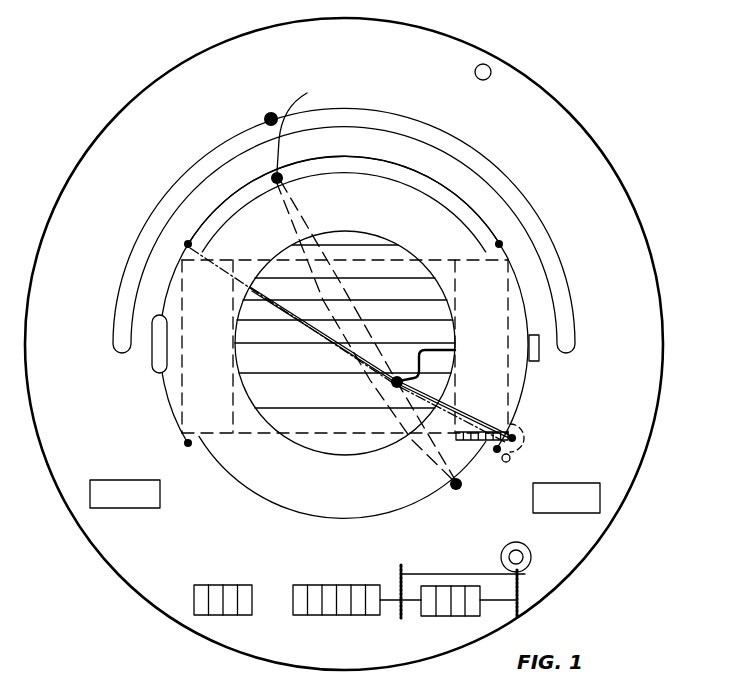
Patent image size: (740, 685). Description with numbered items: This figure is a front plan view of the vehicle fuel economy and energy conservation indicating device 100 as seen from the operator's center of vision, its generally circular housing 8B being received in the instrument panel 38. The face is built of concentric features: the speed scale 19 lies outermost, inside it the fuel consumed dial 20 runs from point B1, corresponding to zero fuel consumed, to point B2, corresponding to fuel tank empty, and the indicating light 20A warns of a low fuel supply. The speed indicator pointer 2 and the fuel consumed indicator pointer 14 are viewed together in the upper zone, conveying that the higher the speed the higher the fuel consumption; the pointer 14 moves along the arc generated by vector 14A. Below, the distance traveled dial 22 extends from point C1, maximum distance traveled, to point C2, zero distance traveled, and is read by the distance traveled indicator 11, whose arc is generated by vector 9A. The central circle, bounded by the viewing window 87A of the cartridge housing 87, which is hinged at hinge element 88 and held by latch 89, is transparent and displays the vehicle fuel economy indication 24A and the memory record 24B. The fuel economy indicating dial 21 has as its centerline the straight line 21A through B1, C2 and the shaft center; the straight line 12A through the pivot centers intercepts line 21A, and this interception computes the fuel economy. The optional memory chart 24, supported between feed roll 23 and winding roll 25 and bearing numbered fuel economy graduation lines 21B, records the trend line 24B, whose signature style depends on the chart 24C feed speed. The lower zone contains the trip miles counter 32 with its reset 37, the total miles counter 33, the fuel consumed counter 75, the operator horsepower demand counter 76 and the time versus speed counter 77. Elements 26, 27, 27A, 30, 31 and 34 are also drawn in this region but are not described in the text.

The vehicle fuel economy and energy conservation indicating device 100 is at (626, 157).
The housing 8B is at (659, 274).
The instrument panel 38 is at (637, 91).
The speed scale 19 is at (189, 167).
The speed indicator pointer 2 is at (263, 119).
The fuel consumed indicator pointer 14 is at (301, 127).
The indicating light 20A is at (489, 65).
The fuel consumed dial 20 is at (228, 204).
The zero fuel consumed point B1 is at (185, 246).
The fuel tank empty point B2 is at (503, 246).
The cartridge housing 87 is at (167, 399).
The hinge element 88 is at (158, 373).
The latch 89 is at (538, 359).
The distance traveled dial 22 is at (190, 471).
The distance traveled indicator 11 is at (459, 488).
The maximum distance traveled point C1 is at (185, 442).
The zero distance traveled point C2 is at (500, 452).
The viewing window 87A is at (380, 239).
The fuel economy indicator centerline 12A is at (362, 327).
The feed roll 23 is at (185, 341).
The memory chart 24 is at (246, 429).
The winding roll 25 is at (507, 343).
The longitudinal centerline 21A is at (231, 273).
The fuel economy indicating dial 21 is at (308, 322).
The fuel consumed vector 14A is at (297, 236).
The distance traveled vector 9A is at (403, 408).
The vehicle fuel economy indication 24A is at (392, 383).
The memory record 24B is at (433, 352).
The chart 24C is at (301, 374).
The fuel economy graduation lines 21B is at (341, 409).
The bar graph segments 26 is at (459, 431).
The indicator point 27 is at (515, 435).
The indicator arc 27A is at (527, 447).
The operator horsepower demand counter 76 is at (114, 506).
The time versus speed counter 77 is at (556, 510).
The fuel consumed counter 75 is at (205, 585).
The total miles counter 33 is at (318, 585).
The trip odometer frame 30 is at (406, 574).
The frame line 34 is at (519, 584).
The trip miles counter 32 is at (438, 586).
The reset button 31 is at (512, 560).
The trip miles counter reset 37 is at (514, 551).